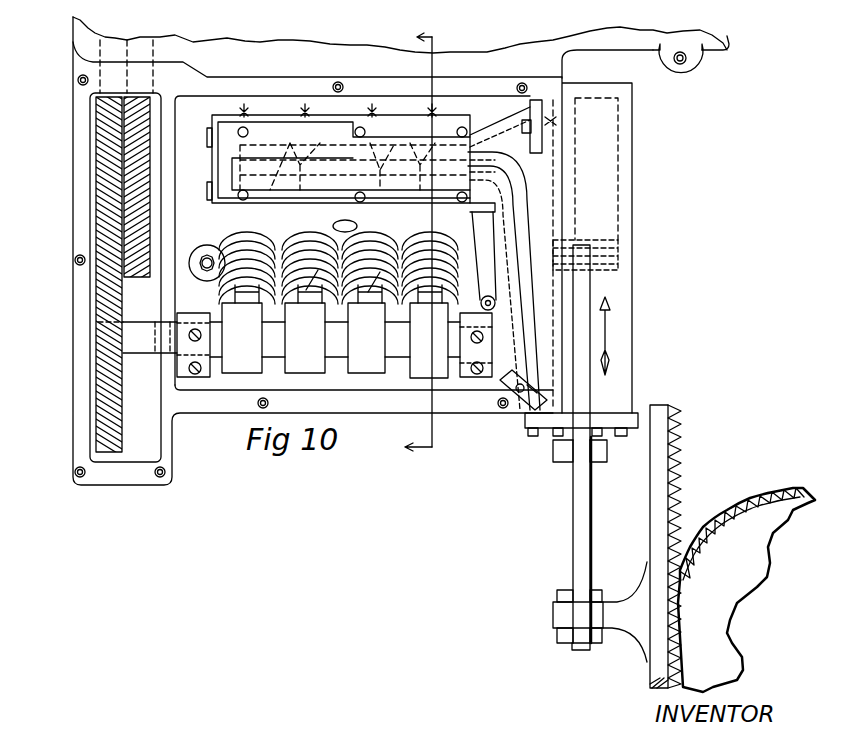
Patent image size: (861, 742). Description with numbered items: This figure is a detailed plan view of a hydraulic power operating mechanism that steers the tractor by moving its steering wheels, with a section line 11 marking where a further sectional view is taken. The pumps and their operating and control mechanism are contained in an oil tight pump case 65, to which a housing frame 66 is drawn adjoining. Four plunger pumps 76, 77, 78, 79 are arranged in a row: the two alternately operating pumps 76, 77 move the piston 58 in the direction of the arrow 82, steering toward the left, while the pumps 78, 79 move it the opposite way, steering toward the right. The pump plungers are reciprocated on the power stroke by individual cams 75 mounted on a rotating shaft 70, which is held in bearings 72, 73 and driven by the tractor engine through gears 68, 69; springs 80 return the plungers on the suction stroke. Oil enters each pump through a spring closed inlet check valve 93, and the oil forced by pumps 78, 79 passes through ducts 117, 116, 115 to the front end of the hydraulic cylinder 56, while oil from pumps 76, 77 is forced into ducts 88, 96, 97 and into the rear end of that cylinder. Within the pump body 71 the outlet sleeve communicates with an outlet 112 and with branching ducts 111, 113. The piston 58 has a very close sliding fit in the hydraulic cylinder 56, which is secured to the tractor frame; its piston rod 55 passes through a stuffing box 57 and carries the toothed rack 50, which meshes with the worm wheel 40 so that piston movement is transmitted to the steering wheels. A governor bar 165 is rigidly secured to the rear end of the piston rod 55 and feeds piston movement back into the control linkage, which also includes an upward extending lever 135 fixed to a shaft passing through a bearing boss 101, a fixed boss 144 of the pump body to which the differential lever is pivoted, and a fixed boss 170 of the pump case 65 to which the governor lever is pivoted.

The section line 11 is at (427, 247).
The worm wheel 40 is at (746, 590).
The toothed rack 50 is at (657, 467).
The piston rod 55 is at (570, 497).
The hydraulic cylinder 56 is at (610, 183).
The stuffing box 57 is at (553, 440).
The piston 58 is at (605, 255).
The pump case 65 is at (273, 82).
The frame 66 is at (230, 380).
The gear 68 is at (105, 93).
The gear 69 is at (105, 455).
The rotating shaft 70 is at (137, 337).
The pump body 71 is at (207, 208).
The bearing 72 is at (197, 320).
The bearing 73 is at (476, 350).
The cam 75 is at (294, 336).
The plunger pump 76 is at (248, 290).
The plunger pump 77 is at (312, 290).
The plunger pump 78 is at (372, 290).
The plunger pump 79 is at (430, 290).
The spring 80 is at (312, 298).
The arrow 82 is at (605, 337).
The duct 88 is at (212, 200).
The inlet check valve 93 is at (301, 110).
The duct 96 is at (525, 188).
The duct 97 is at (540, 418).
The bearing boss 101 is at (470, 203).
The branching duct 111 is at (355, 164).
The outlet 112 is at (345, 220).
The branching duct 113 is at (402, 154).
The duct 115 is at (550, 120).
The duct 116 is at (498, 145).
The duct 117 is at (489, 166).
The lever 135 is at (488, 250).
The fixed boss 144 is at (193, 253).
The governor bar 165 is at (580, 520).
The fixed boss 170 is at (688, 66).